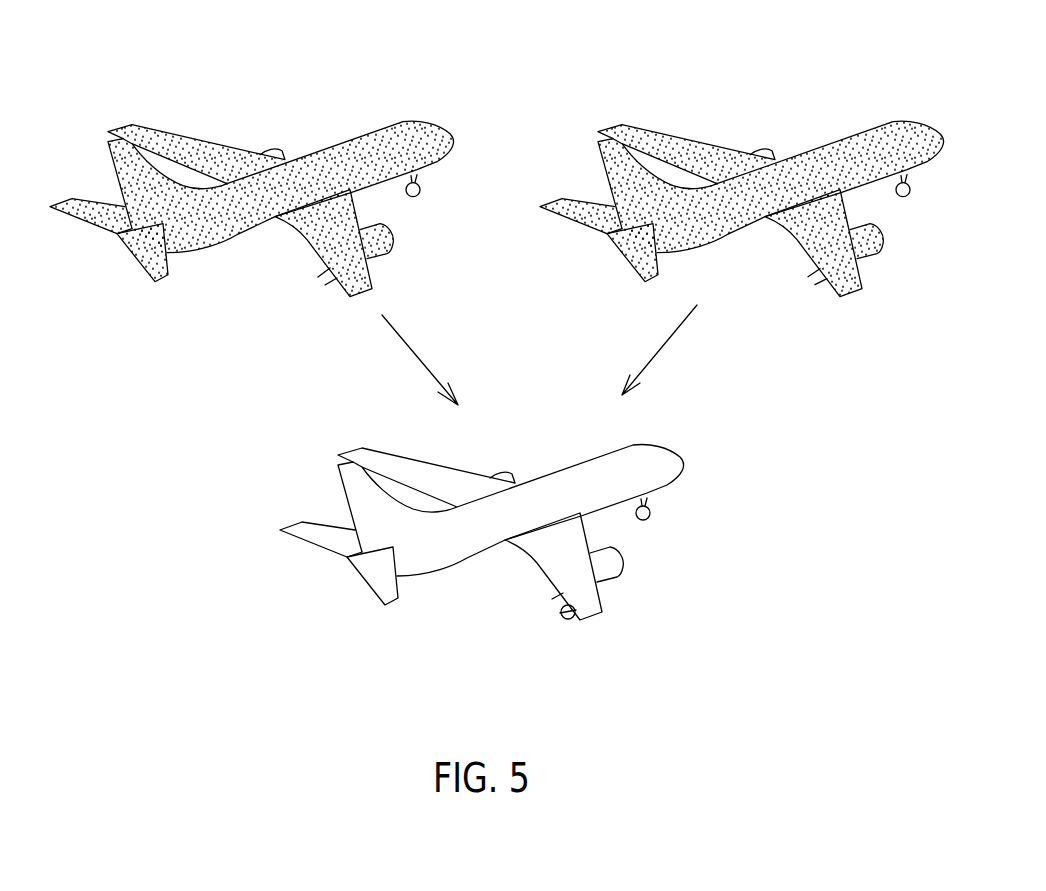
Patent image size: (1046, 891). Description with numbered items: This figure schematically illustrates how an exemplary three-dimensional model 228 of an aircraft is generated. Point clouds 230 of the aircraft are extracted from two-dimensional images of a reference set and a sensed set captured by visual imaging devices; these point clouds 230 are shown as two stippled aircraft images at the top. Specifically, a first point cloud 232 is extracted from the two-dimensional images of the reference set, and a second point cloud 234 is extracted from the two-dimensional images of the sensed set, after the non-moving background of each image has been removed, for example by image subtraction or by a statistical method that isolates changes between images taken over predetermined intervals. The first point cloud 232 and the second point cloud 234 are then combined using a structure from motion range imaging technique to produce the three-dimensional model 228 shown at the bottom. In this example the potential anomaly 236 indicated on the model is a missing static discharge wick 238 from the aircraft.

The three-dimensional model 228 is at (676, 420).
The point clouds 230 is at (596, 99).
The first point cloud 232 is at (352, 138).
The second point cloud 234 is at (842, 138).
The potential anomaly 236 is at (568, 622).
The static discharge wick 238 is at (338, 288).